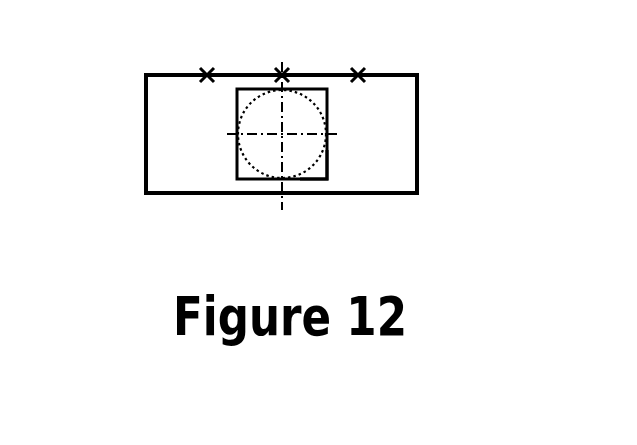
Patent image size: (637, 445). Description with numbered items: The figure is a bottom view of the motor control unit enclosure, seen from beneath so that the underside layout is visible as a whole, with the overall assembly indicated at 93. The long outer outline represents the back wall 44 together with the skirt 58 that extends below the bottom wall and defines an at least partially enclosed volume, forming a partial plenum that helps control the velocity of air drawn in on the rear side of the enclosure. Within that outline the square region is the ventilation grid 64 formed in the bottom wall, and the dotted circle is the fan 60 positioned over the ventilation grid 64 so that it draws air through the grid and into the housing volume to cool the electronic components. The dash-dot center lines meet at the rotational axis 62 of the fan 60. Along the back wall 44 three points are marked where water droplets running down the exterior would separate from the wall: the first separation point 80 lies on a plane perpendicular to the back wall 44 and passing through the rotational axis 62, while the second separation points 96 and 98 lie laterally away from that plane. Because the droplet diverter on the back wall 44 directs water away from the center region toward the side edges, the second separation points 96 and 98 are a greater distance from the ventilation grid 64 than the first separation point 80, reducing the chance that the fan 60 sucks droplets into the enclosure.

The back wall 44 is at (387, 75).
The skirt 58 is at (405, 197).
The fan 60 is at (257, 172).
The rotational axis 62 is at (282, 135).
The ventilation grid 64 is at (323, 181).
The first separation point 80 is at (278, 72).
The assembly 93 is at (110, 90).
The second separation point 96 is at (203, 72).
The second separation point 98 is at (355, 72).